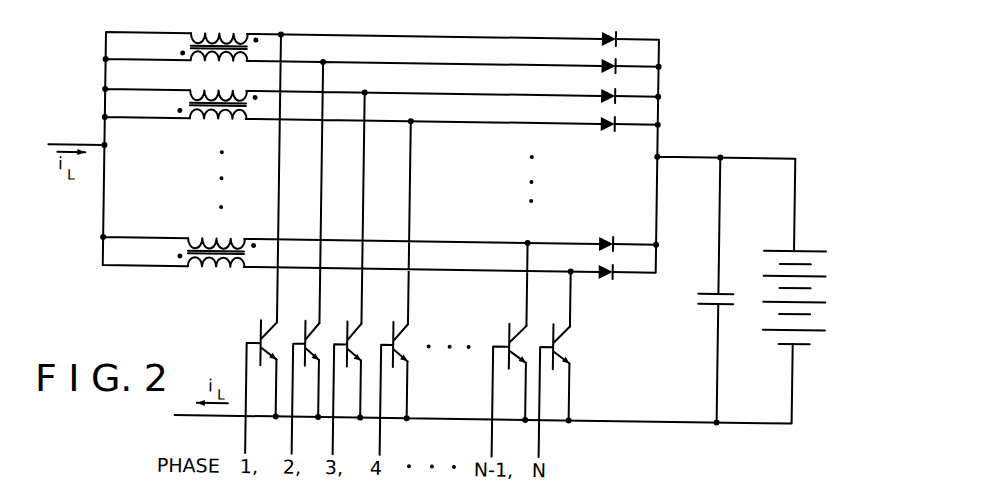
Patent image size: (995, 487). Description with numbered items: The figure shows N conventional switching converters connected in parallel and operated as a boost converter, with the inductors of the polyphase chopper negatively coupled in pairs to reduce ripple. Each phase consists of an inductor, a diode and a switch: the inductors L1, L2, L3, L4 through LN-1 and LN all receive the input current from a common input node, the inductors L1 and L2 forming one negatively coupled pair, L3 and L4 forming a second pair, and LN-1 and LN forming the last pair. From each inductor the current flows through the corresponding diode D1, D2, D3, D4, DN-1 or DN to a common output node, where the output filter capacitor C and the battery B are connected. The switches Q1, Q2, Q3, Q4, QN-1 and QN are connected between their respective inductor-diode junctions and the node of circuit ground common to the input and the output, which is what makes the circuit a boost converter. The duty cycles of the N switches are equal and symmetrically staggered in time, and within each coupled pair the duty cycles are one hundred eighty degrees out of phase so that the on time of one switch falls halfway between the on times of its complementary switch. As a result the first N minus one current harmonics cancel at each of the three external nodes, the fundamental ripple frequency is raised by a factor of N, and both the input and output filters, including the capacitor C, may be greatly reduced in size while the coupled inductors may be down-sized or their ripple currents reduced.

The inductor L1 is at (207, 31).
The inductor L2 is at (217, 62).
The inductor L3 is at (226, 88).
The inductor L4 is at (220, 121).
The inductor LN-1 is at (220, 236).
The inductor LN is at (199, 268).
The diode D1 is at (600, 26).
The diode D2 is at (603, 56).
The diode D3 is at (603, 83).
The diode D4 is at (600, 123).
The diode DN-1 is at (600, 231).
The diode DN is at (599, 272).
The switch Q1 is at (274, 333).
The switch Q2 is at (316, 333).
The switch Q3 is at (359, 335).
The switch Q4 is at (405, 335).
The switch QN-1 is at (514, 333).
The switch QN is at (562, 338).
The output filter capacitor C is at (702, 304).
The battery B is at (796, 298).